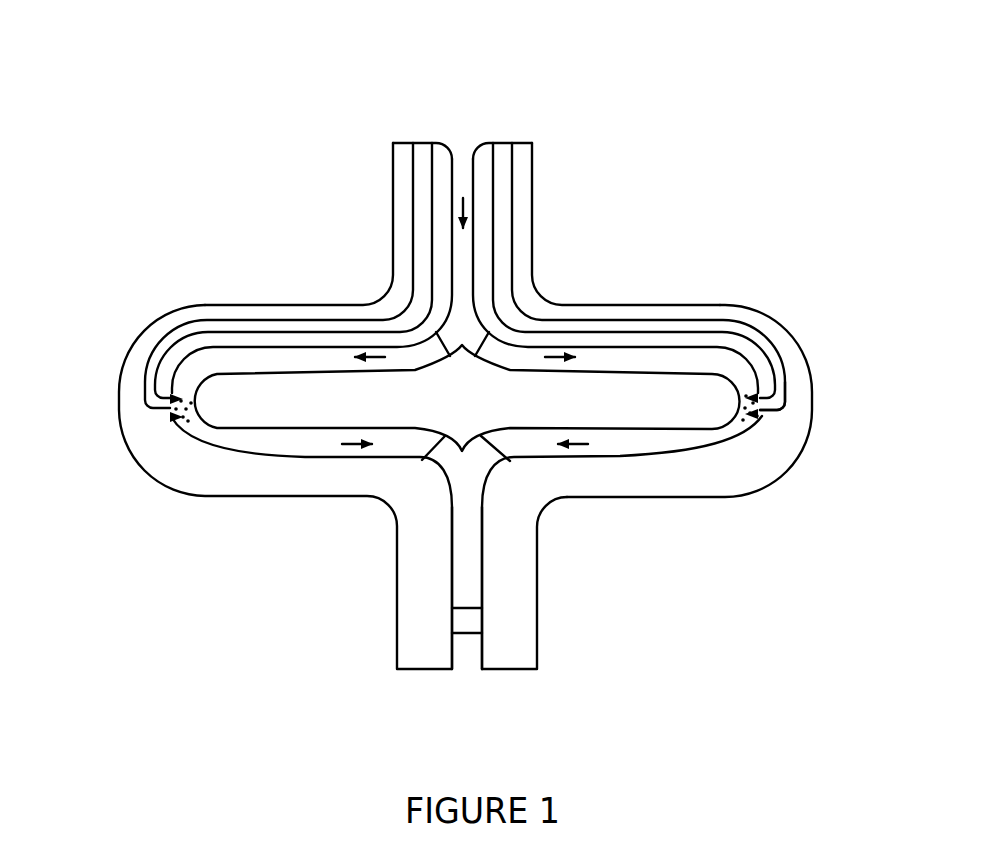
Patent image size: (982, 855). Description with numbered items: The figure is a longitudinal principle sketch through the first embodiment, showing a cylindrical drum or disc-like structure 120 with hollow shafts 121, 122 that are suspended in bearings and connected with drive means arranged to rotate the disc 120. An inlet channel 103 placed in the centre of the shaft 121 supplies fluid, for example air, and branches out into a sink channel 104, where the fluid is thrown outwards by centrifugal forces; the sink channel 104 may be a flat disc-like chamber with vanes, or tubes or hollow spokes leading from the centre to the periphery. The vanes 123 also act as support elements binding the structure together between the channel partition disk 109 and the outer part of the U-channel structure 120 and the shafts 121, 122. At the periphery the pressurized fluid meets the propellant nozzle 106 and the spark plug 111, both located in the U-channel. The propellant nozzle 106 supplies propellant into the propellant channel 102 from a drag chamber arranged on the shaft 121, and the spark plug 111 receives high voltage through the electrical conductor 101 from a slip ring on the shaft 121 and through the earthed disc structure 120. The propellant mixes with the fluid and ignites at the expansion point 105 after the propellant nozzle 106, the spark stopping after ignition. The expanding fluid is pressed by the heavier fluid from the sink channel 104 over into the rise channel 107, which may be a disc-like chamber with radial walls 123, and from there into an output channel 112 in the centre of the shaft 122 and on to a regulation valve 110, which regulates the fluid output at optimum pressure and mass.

The electrical conductor 101 is at (403, 136).
The propellant channel 102 is at (430, 137).
The inlet channel 103 is at (463, 94).
The sink channel 104 is at (593, 360).
The expansion point 105 is at (168, 407).
The propellant nozzle 106 is at (763, 396).
The rise channel 107 is at (650, 440).
The channel partition disk 109 is at (320, 394).
The regulation valve 110 is at (472, 623).
The spark plug 111 is at (762, 420).
The output channel 112 is at (467, 550).
The cylindrical drum or disc-like structure 120 is at (145, 328).
The hollow shaft 121 is at (537, 230).
The hollow shaft 122 is at (508, 627).
The vanes / radial walls 123 is at (762, 436).